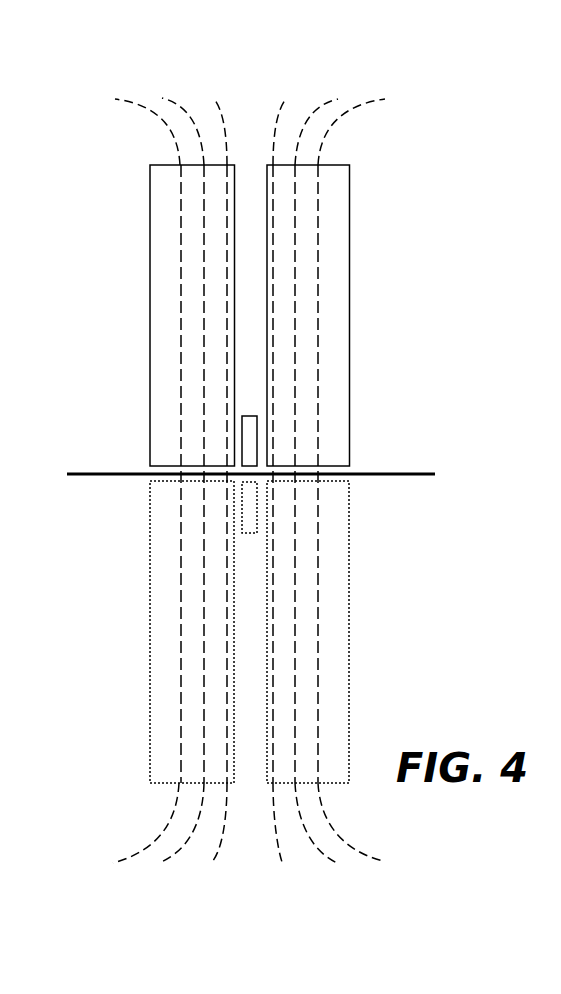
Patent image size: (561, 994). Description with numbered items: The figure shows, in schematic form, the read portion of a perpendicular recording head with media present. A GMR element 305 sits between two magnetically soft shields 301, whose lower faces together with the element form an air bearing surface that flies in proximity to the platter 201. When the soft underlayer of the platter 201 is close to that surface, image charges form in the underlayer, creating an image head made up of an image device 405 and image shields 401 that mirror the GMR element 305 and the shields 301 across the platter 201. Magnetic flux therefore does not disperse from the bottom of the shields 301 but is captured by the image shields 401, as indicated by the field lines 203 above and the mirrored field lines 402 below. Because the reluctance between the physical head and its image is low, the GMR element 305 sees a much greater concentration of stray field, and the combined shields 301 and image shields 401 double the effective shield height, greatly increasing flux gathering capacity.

The magnetic field lines 203 is at (347, 78).
The shield 301 is at (157, 288).
The GMR element 305 is at (243, 423).
The platter 201 is at (435, 474).
The image shield 401 is at (155, 660).
The image device 405 is at (245, 503).
The mirror image magnetic field lines 402 is at (340, 837).